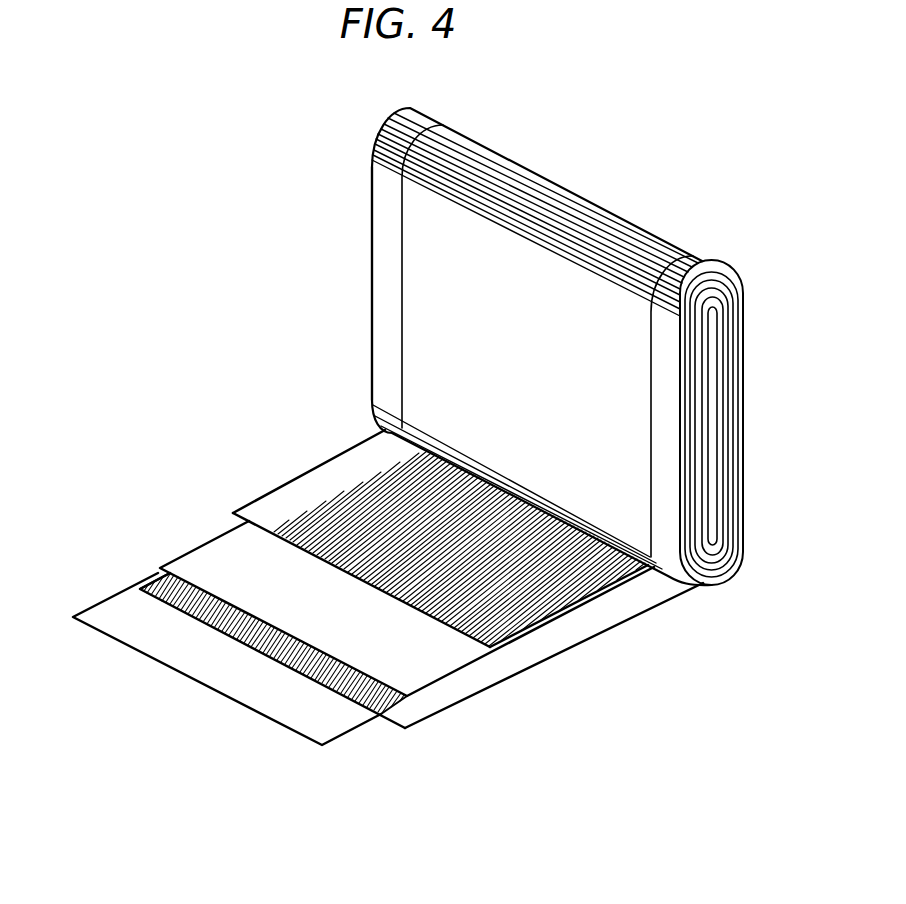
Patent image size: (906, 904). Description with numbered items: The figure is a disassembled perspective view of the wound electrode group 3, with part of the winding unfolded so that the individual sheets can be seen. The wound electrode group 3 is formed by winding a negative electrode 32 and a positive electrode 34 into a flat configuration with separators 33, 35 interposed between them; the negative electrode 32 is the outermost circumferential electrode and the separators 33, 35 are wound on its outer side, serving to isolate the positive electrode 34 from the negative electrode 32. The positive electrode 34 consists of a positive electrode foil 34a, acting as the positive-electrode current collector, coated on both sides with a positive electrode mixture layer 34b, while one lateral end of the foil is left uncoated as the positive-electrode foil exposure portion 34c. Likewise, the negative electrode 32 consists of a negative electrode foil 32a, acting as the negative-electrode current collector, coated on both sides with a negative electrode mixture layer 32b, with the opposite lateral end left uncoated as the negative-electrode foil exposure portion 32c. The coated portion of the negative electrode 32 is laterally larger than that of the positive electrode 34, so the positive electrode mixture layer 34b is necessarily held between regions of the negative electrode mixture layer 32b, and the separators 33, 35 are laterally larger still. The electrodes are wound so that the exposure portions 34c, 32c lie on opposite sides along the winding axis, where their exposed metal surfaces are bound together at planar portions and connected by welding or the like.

The wound electrode group 3 is at (541, 218).
The negative electrode 32 is at (263, 651).
The negative electrode foil 32a is at (360, 696).
The negative electrode mixture layer 32b is at (140, 586).
The negative-electrode foil exposure portion 32c is at (667, 427).
The separator 33 is at (207, 542).
The positive electrode 34 is at (600, 572).
The positive electrode foil 34a is at (310, 522).
The positive electrode mixture layer 34b is at (512, 613).
The positive-electrode foil exposure portion 34c is at (380, 275).
The separator 35 is at (97, 603).